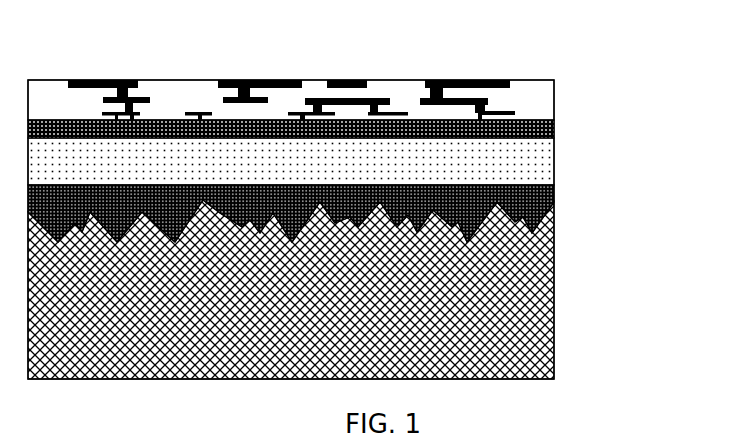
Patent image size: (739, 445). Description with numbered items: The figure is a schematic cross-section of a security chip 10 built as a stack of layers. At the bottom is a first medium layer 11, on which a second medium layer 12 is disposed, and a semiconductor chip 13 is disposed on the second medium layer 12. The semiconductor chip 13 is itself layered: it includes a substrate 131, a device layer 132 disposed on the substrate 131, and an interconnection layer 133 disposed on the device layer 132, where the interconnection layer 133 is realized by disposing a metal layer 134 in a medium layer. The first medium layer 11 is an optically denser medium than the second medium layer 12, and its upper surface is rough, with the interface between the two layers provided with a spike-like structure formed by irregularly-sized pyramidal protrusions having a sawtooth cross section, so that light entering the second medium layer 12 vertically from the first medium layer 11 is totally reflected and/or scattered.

The security chip 10 is at (41, 23).
The first medium layer 11 is at (545, 310).
The second medium layer 12 is at (554, 197).
The semiconductor chip 13 is at (371, 105).
The substrate 131 is at (545, 165).
The device layer 132 is at (547, 125).
The interconnection layer 133 is at (330, 72).
The metal layer 134 is at (450, 80).